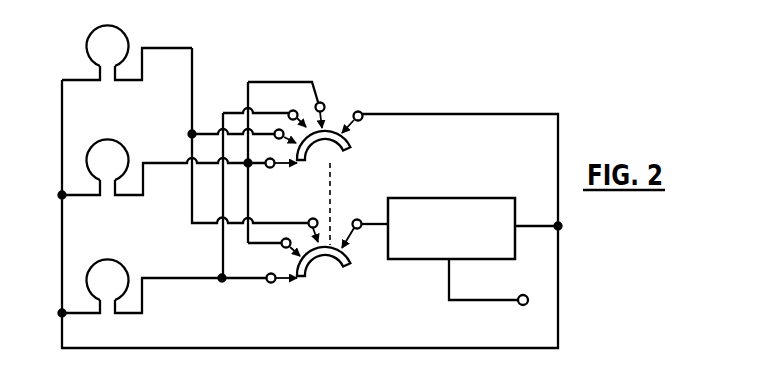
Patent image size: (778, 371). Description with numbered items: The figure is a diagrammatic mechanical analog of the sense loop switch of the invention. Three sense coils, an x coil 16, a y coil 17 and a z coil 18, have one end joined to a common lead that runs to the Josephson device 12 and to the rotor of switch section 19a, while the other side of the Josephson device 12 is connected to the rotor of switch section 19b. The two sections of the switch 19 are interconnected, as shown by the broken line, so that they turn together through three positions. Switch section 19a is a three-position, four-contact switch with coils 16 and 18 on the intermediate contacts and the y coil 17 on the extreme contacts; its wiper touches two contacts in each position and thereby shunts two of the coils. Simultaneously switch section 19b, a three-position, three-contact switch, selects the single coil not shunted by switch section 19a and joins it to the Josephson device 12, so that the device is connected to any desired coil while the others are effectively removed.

The Josephson device 12 is at (444, 198).
The x coil 16 is at (92, 29).
The y coil 17 is at (92, 146).
The z coil 18 is at (92, 264).
The switch 19 is at (283, 121).
The switch section 19a is at (340, 145).
The switch section 19b is at (336, 268).